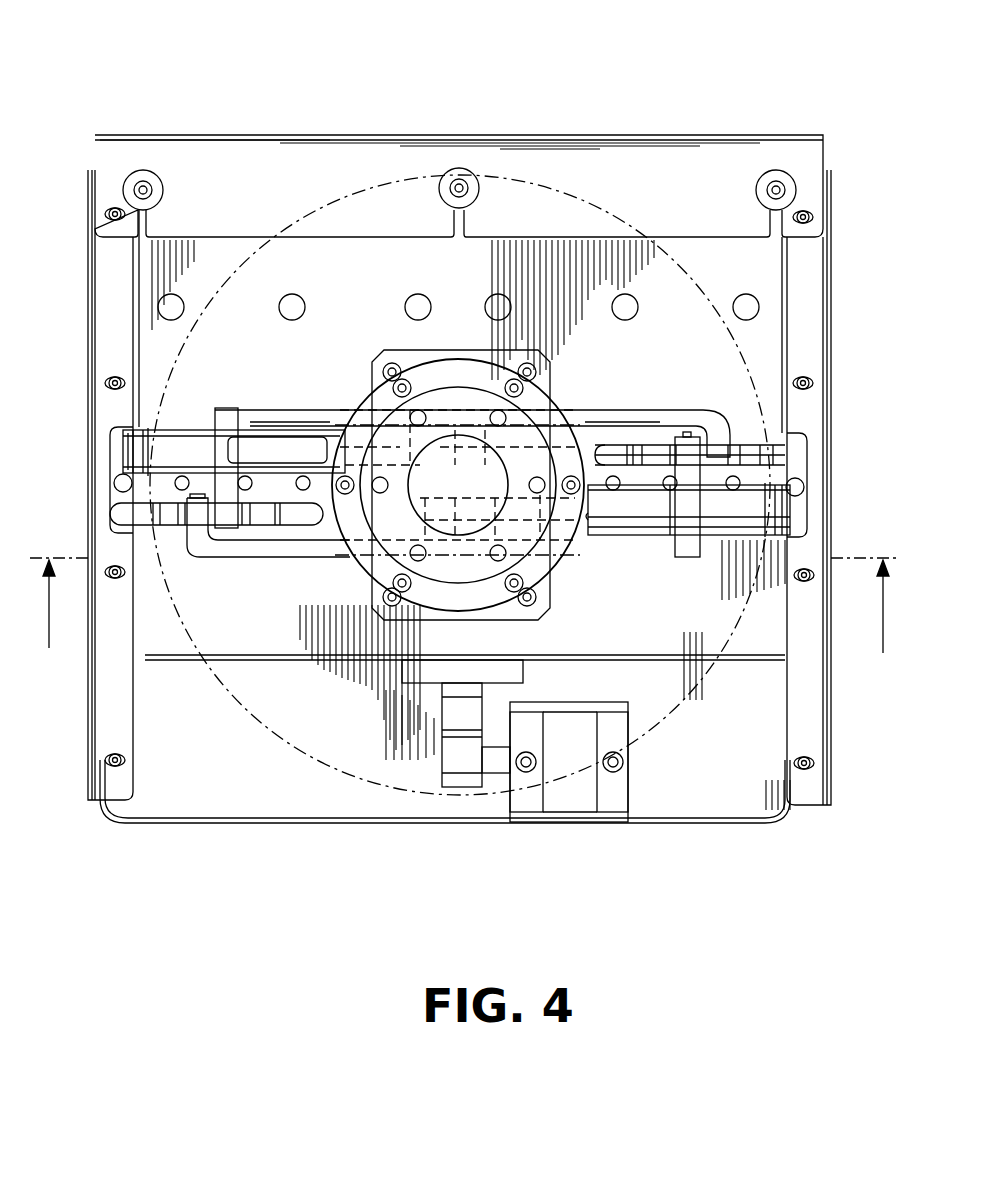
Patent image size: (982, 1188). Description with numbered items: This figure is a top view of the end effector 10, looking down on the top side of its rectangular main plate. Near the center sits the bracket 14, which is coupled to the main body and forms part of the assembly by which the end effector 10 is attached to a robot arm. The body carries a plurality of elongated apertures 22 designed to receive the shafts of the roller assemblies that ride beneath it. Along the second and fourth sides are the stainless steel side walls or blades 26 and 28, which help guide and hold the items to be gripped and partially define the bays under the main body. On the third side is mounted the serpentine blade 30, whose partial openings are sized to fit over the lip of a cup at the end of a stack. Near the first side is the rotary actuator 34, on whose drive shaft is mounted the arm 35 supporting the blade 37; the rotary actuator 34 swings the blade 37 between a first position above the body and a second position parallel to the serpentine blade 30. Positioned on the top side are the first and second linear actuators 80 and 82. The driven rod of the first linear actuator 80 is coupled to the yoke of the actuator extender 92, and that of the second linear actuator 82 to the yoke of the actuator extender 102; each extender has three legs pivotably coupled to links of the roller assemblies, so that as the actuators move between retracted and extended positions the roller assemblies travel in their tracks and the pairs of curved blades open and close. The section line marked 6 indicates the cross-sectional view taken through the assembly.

The end effector 10 is at (68, 104).
The serpentine blade 30 is at (613, 160).
The side wall or blade 28 is at (108, 732).
The side wall or blade 26 is at (802, 738).
The bracket 14 is at (514, 360).
The actuator extender 92 is at (638, 420).
The first linear actuator 80 is at (187, 450).
The actuator extender 102 is at (268, 547).
The second linear actuator 82 is at (638, 505).
The elongated apertures 22 is at (125, 513).
The blade 37 is at (173, 660).
The arm 35 is at (443, 712).
The rotary actuator 34 is at (618, 788).
The section line 6- 6 is at (464, 606).